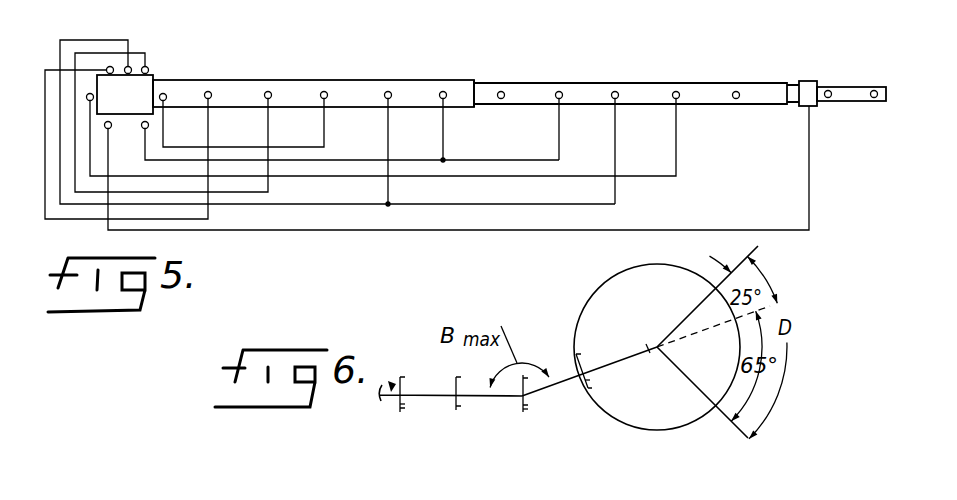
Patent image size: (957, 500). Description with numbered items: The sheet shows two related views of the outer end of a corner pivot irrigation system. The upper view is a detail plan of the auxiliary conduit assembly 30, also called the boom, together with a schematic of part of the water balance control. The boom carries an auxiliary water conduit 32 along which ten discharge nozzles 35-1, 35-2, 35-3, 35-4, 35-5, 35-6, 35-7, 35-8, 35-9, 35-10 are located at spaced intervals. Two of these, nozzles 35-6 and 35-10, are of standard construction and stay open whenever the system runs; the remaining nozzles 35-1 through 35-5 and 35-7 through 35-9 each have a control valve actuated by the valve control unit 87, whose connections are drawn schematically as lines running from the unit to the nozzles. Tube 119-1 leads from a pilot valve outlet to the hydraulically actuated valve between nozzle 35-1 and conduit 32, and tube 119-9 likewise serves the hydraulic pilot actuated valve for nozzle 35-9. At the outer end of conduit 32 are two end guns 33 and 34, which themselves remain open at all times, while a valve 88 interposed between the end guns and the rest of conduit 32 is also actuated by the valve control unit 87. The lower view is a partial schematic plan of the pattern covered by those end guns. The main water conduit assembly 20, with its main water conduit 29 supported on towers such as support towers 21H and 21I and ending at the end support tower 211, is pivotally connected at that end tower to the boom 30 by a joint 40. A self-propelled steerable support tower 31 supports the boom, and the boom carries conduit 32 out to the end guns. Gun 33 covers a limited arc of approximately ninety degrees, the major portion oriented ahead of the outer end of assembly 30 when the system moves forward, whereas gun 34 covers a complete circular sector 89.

In FIG. 5, the valve control unit 87 is at (154, 75).
In FIG. 5, the auxiliary conduit assembly 30 is at (521, 67).
In FIG. 6, the auxiliary conduit assembly 30 is at (568, 374).
In FIG. 5, the auxiliary water conduit 32 is at (407, 108).
In FIG. 6, the auxiliary water conduit 32 is at (605, 365).
In FIG. 5, the valve 88 is at (826, 60).
In FIG. 5, the end gun 33 is at (878, 88).
In FIG. 6, the end gun 33 is at (655, 350).
In FIG. 5, the end gun 34 is at (828, 98).
In FIG. 6, the end gun 34 is at (645, 351).
In FIG. 5, the discharge nozzle 35-1 is at (210, 88).
In FIG. 5, the discharge nozzle 35-2 is at (268, 99).
In FIG. 5, the discharge nozzle 35-3 is at (326, 88).
In FIG. 5, the discharge nozzle 35-4 is at (386, 100).
In FIG. 5, the discharge nozzle 35-5 is at (444, 88).
In FIG. 5, the discharge nozzle 35-6 is at (501, 99).
In FIG. 5, the discharge nozzle 35-7 is at (561, 88).
In FIG. 5, the discharge nozzle 35-8 is at (616, 99).
In FIG. 5, the discharge nozzle 35-9 is at (680, 87).
In FIG. 5, the discharge nozzle 35-10 is at (736, 99).
In FIG. 5, the tube 119-1 is at (209, 127).
In FIG. 5, the tube 119-9 is at (676, 148).
In FIG. 6, the circular sector 89 is at (621, 270).
In FIG. 6, the main water conduit assembly 20 is at (402, 368).
In FIG. 6, the main water conduit 29 is at (445, 373).
In FIG. 6, the support tower 21H is at (398, 406).
In FIG. 6, the support tower 21I is at (453, 407).
In FIG. 6, the joint 40 is at (518, 398).
In FIG. 6, the end support tower 211 is at (525, 410).
In FIG. 6, the support tower 31 is at (579, 384).